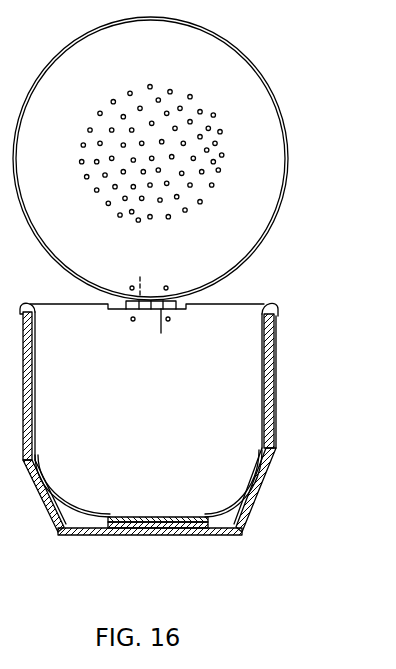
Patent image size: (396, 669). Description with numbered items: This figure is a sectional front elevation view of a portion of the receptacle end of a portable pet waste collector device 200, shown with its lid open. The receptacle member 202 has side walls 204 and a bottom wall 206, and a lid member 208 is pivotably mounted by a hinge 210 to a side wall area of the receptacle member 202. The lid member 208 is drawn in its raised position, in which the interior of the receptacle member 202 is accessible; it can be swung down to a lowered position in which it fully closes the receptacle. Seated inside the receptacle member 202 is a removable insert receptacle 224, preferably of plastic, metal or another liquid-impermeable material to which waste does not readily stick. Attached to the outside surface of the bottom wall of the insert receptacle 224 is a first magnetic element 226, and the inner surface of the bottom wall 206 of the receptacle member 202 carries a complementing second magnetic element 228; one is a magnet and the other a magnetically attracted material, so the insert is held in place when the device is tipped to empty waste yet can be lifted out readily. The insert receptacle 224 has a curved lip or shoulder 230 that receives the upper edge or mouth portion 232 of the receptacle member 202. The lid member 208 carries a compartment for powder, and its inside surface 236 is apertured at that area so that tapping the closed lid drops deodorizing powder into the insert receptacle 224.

The portable pet waste collector device 200 is at (207, 429).
The receptacle member 202 is at (257, 498).
The side walls 204 is at (208, 386).
The bottom wall 206 is at (212, 535).
The lid member 208 is at (285, 203).
The hinge 210 is at (185, 298).
The insert receptacle 224 is at (57, 492).
The first magnetic element 226 is at (200, 516).
The second magnetic element 228 is at (190, 576).
The curved lip or shoulder 230 is at (282, 307).
The upper edge or mouth portion 232 is at (277, 352).
The inside surface 236 is at (250, 95).